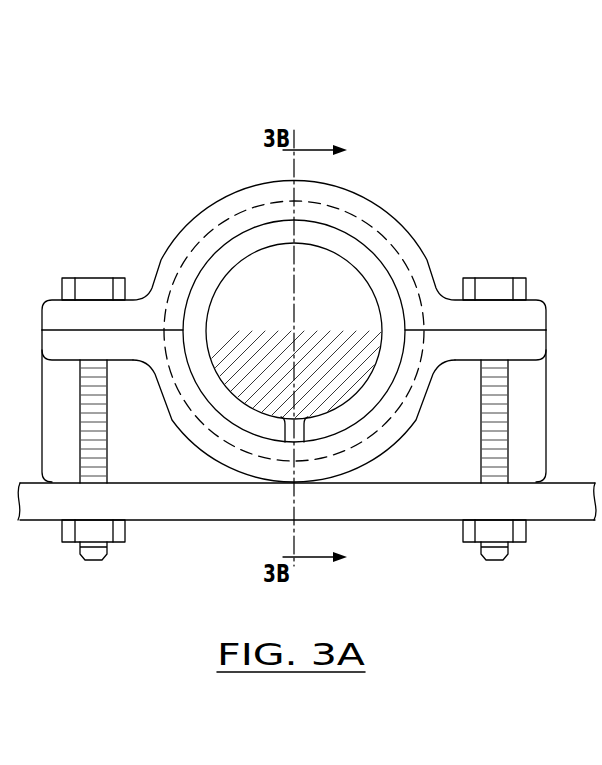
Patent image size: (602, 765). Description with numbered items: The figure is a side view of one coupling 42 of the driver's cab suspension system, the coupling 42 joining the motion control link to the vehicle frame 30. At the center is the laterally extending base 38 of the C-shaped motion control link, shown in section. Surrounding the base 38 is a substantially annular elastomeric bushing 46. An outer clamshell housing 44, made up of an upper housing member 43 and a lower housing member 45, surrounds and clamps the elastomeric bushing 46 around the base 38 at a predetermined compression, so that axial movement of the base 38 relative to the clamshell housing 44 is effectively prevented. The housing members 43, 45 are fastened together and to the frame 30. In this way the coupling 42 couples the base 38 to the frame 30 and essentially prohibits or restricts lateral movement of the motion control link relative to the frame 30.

The vehicle frame 30 is at (397, 503).
The base 38 is at (360, 290).
The coupling 42 is at (294, 337).
The housing member 43 is at (367, 208).
The outer clamshell housing 44 is at (422, 228).
The housing member 45 is at (207, 450).
The elastomeric bushing 46 is at (208, 275).